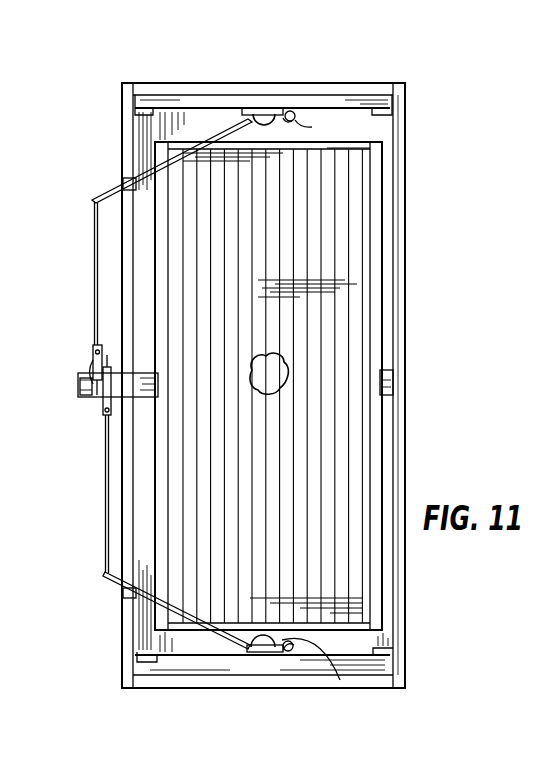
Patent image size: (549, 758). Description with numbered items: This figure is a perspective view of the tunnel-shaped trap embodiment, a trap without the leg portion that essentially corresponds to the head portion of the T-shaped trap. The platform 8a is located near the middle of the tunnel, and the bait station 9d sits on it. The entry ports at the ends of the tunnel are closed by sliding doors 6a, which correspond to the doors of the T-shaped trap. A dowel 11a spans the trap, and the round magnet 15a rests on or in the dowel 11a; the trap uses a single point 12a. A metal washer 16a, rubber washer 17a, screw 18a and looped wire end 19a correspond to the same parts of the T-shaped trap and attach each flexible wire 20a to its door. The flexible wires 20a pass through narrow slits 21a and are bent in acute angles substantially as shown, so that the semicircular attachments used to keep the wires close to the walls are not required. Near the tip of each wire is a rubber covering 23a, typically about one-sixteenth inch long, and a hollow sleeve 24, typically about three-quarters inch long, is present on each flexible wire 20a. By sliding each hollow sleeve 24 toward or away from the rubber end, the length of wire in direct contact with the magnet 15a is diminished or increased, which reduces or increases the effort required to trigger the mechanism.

The sliding doors 6a is at (170, 100).
The platform 8a is at (358, 262).
The bait station 9d is at (285, 368).
The dowel 11a is at (150, 400).
The single point 12a is at (96, 345).
The magnet 15a is at (80, 385).
The metal washer 16a is at (295, 110).
The rubber washer 17a is at (258, 108).
The screw 18a is at (312, 127).
The looped wire end 19a is at (300, 112).
The flexible wire 20a is at (93, 200).
The narrow slits 21a is at (125, 182).
The rubber covering 23a is at (103, 405).
The hollow sleeve 24 is at (93, 355).